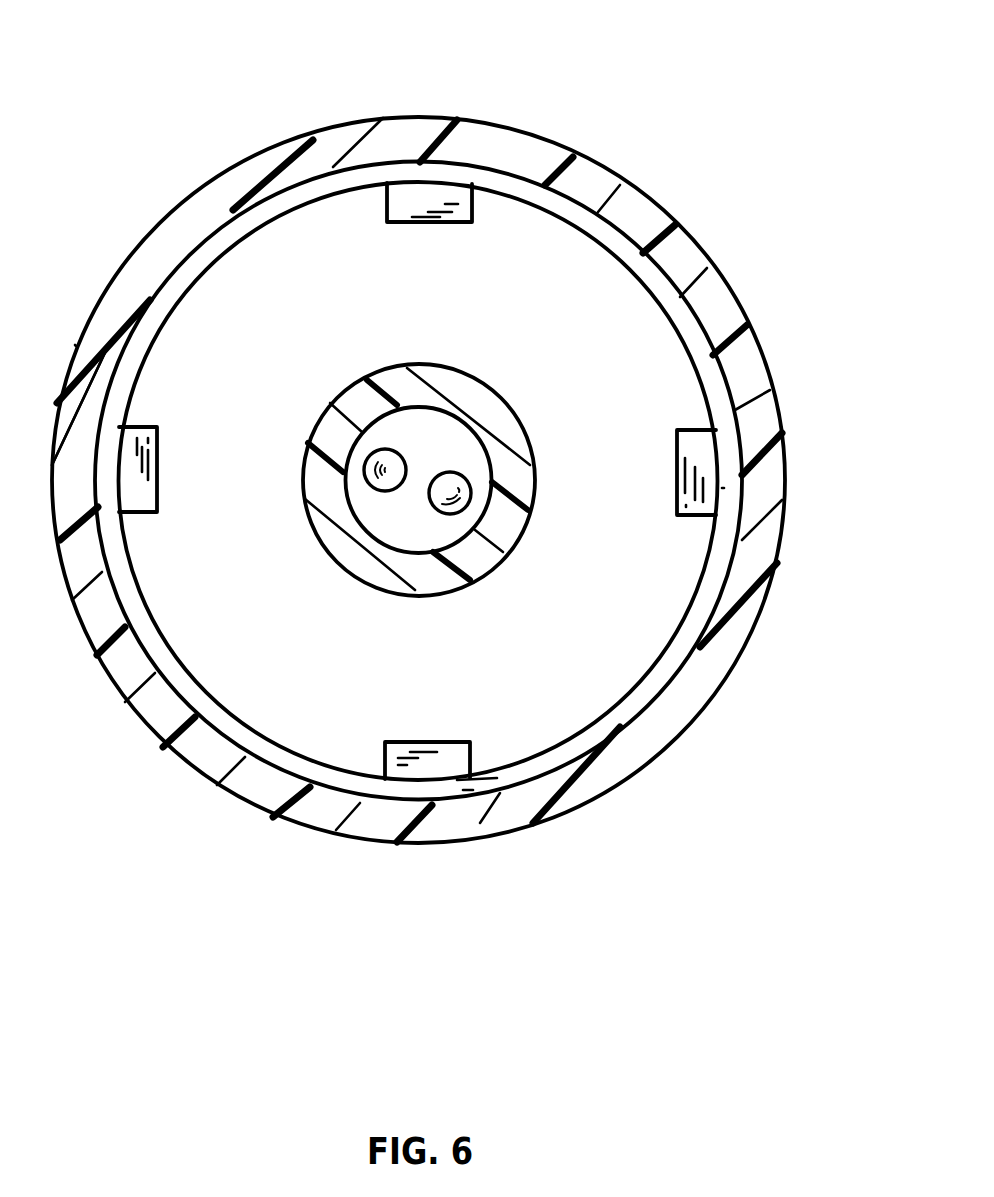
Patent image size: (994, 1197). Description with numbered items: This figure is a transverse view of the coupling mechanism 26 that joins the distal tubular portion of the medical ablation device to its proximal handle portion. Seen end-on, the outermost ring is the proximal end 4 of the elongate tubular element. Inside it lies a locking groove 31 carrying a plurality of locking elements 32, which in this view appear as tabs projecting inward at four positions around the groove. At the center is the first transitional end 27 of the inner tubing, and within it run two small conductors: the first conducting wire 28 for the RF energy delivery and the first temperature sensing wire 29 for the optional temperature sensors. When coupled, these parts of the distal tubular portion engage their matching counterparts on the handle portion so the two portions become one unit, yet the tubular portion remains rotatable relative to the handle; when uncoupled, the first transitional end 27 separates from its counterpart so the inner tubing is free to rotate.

The proximal end of the tubular element 4 is at (693, 237).
The coupling mechanism 26 is at (825, 480).
The first transitional end of the inner tubing 27 is at (540, 452).
The first conducting wire 28 is at (400, 455).
The first temperature sensing wire 29 is at (448, 510).
The locking groove 31 is at (622, 180).
The locking elements 32 is at (472, 190).